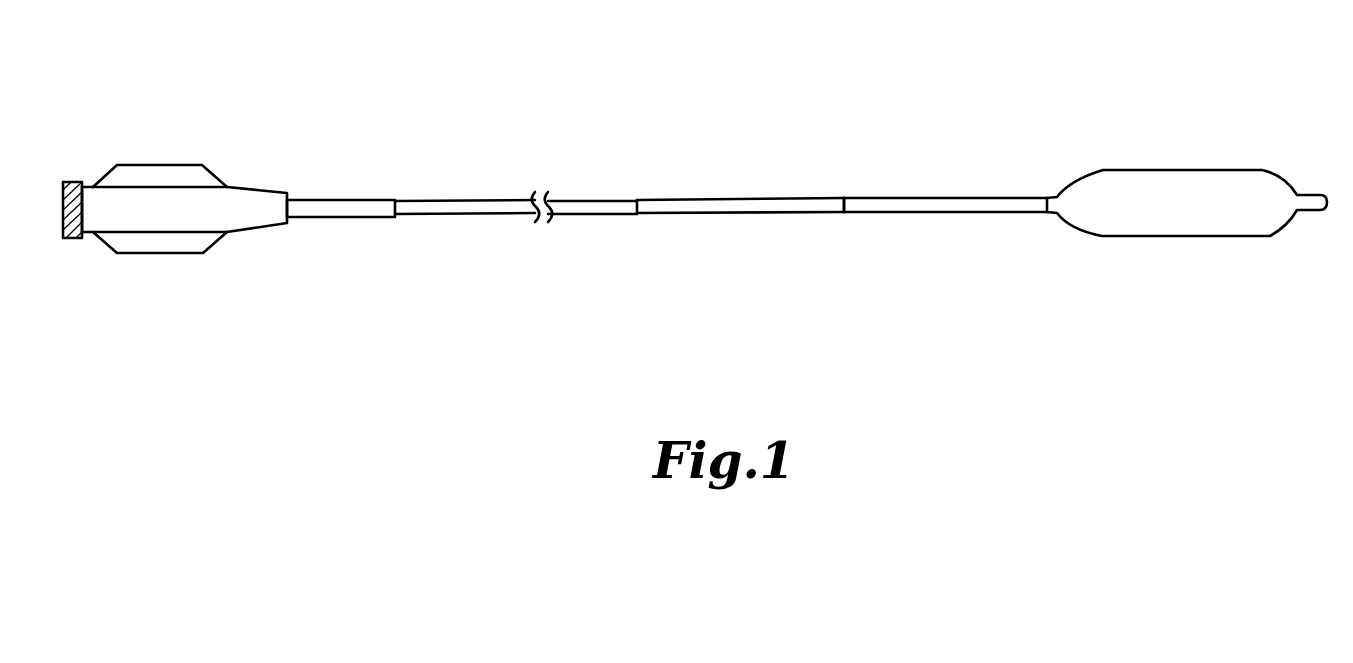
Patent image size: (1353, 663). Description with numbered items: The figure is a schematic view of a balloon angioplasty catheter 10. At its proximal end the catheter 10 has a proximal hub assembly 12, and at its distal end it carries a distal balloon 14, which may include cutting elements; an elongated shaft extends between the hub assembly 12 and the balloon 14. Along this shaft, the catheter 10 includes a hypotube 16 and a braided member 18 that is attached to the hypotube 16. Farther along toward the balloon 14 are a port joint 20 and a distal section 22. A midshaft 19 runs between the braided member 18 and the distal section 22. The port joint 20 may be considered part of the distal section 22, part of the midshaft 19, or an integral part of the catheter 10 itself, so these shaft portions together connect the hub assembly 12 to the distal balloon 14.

The catheter 10 is at (568, 118).
The proximal hub assembly 12 is at (160, 177).
The distal balloon 14 is at (1207, 228).
The hypotube 16 is at (470, 213).
The braided member 18 is at (690, 213).
The midshaft 19 is at (800, 118).
The port joint 20 is at (844, 198).
The distal section 22 is at (962, 199).